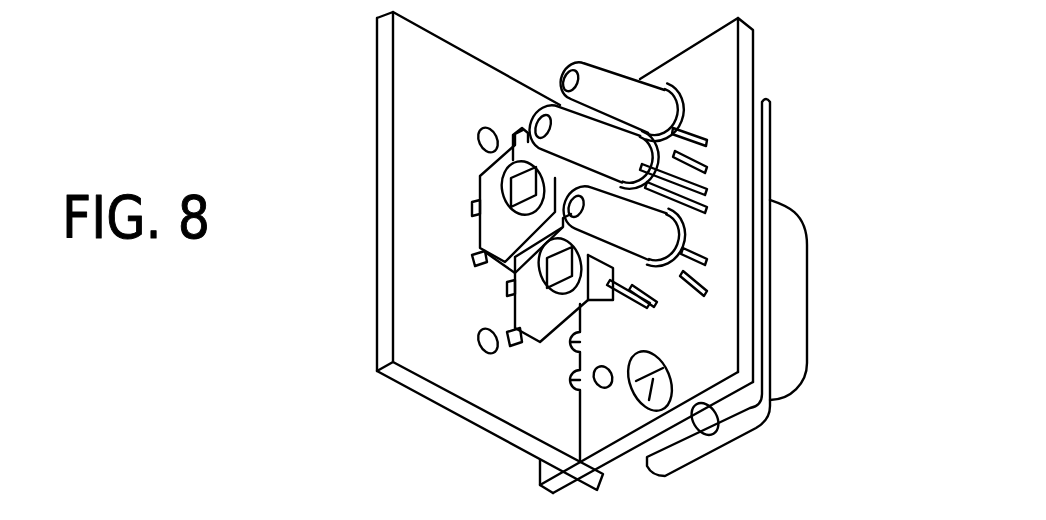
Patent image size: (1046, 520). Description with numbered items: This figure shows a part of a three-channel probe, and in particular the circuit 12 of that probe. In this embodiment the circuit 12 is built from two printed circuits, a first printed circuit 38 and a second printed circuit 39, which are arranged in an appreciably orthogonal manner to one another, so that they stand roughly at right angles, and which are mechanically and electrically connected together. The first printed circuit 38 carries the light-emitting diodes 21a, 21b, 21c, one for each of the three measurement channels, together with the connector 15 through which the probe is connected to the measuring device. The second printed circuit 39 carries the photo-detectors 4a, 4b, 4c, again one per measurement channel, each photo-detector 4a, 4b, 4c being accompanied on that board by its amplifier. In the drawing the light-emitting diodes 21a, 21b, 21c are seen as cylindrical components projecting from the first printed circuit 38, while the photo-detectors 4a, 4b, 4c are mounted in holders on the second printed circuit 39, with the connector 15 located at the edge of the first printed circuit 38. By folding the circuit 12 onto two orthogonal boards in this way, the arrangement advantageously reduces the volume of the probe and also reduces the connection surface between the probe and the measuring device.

The circuit 12 is at (505, 390).
The second printed circuit 39 is at (458, 362).
The first printed circuit 38 is at (683, 385).
The connector 15 is at (783, 338).
The photo-detector 4a is at (480, 253).
The photo-detector 4b is at (485, 180).
The photo-detector 4c is at (522, 130).
The light-emitting diode 21a is at (647, 245).
The light-emitting diode 21b is at (620, 158).
The light-emitting diode 21c is at (637, 108).